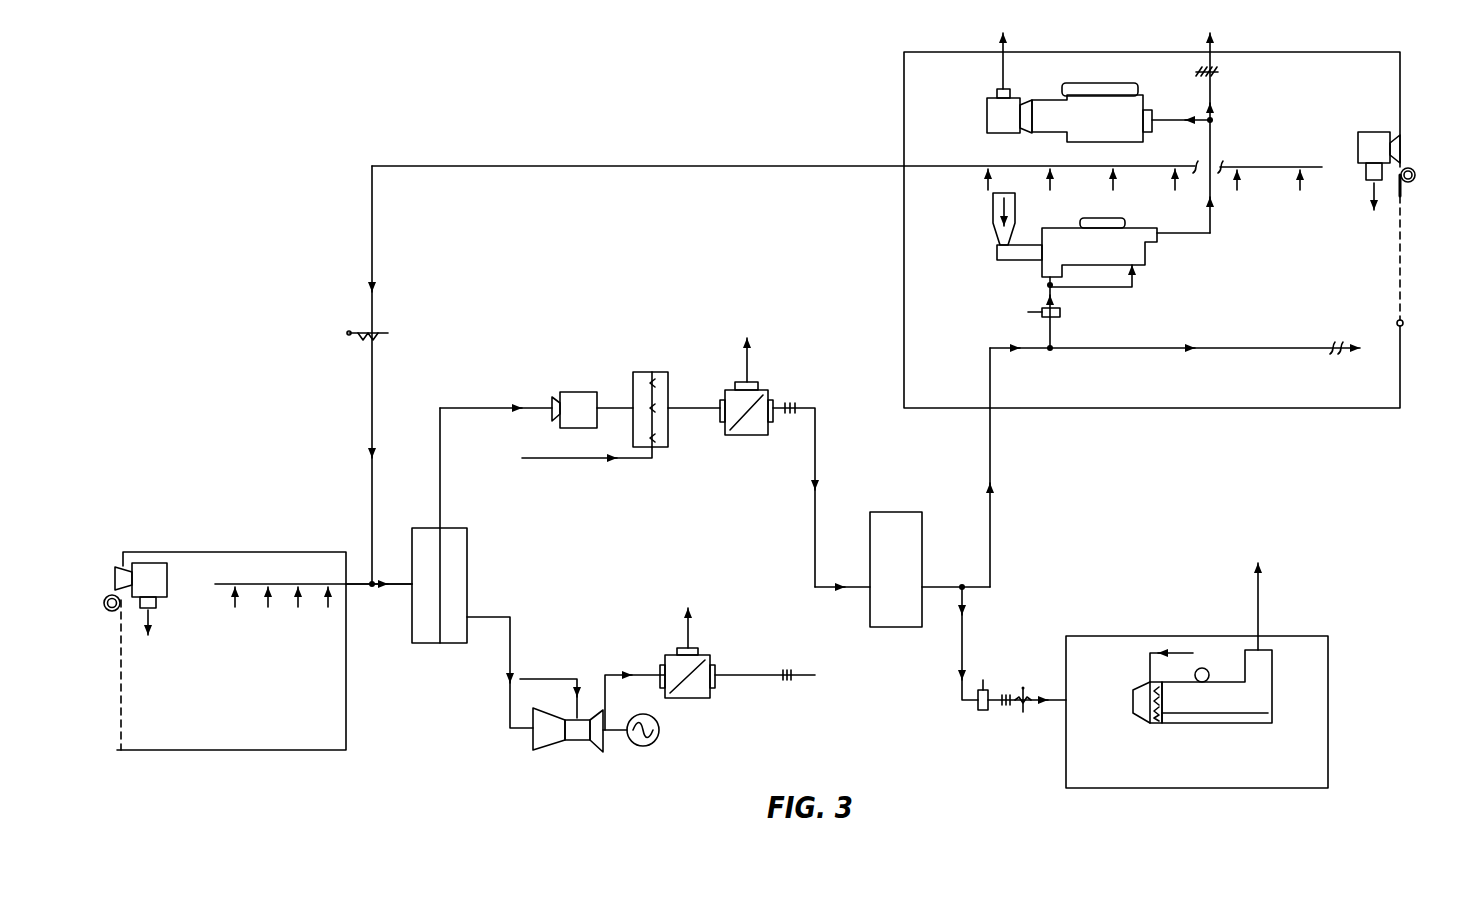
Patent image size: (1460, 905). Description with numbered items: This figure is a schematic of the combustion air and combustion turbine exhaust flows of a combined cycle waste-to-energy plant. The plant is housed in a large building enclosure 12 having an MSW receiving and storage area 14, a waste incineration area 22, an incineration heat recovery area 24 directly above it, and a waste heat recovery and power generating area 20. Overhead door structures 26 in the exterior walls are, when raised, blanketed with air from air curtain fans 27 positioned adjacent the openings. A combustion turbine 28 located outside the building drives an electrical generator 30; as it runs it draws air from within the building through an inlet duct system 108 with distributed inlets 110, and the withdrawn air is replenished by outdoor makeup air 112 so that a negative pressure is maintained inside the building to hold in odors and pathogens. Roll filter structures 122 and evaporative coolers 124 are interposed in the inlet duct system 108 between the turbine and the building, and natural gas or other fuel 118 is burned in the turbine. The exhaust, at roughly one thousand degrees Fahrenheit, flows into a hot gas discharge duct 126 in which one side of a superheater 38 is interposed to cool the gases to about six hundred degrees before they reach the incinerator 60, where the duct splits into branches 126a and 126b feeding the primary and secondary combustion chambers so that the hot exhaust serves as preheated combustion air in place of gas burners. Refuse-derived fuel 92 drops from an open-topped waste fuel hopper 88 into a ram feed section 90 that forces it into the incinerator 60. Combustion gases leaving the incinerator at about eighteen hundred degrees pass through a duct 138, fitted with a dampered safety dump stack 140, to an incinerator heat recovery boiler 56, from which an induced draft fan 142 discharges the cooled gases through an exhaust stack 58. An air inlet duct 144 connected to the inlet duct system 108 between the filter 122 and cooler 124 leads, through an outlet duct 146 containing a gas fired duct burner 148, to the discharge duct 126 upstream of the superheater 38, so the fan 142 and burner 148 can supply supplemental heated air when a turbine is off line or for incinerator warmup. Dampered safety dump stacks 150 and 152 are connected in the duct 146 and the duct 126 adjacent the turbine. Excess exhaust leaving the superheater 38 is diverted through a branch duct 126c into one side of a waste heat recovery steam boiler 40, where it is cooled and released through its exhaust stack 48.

The building enclosure 12 is at (350, 725).
The MSW receiving and storage area 14 is at (214, 686).
The waste heat recovery and electrical power generating area 20 is at (1203, 762).
The waste incineration area 22 is at (1170, 279).
The incineration heat recovery area 24 is at (1300, 99).
The overhead door structures 26 is at (104, 598).
The air curtain fans 27 is at (155, 563).
The combustion turbines 28 is at (570, 752).
The electrical generators 30 is at (658, 742).
The superheater 38 is at (902, 512).
The waste heat recovery steam boiler 40 is at (1275, 687).
The exhaust stack 48 is at (1262, 601).
The incinerator heat recovery boilers 56 is at (1086, 127).
The exhaust stack 58 is at (1003, 68).
The incinerator 60 is at (1083, 257).
The waste fuel hoppers 88 is at (993, 203).
The ram feed section 90 is at (997, 256).
The RDF 92 is at (1015, 207).
The inlet duct system 108 is at (662, 166).
The inlets 110 is at (277, 590).
The outdoor makeup air 112 is at (117, 695).
The fuel 118 is at (538, 679).
The roll filter structures 122 is at (420, 643).
The evaporative coolers 124 is at (467, 528).
The hot gas discharge duct 126 is at (1132, 348).
The branch 126a is at (1048, 285).
The branch 126b is at (1122, 290).
The branch duct 126c is at (965, 645).
The duct 138 is at (1188, 94).
The dampered safety dump stack 140 is at (1213, 88).
The induced draft fan 142 is at (988, 110).
The air inlet duct 144 is at (525, 382).
The outlet duct 146 is at (614, 408).
The gas fired duct burner 148 is at (652, 372).
The dampered safety dump stack 150 is at (765, 387).
The dampered safety dump stack 152 is at (707, 655).